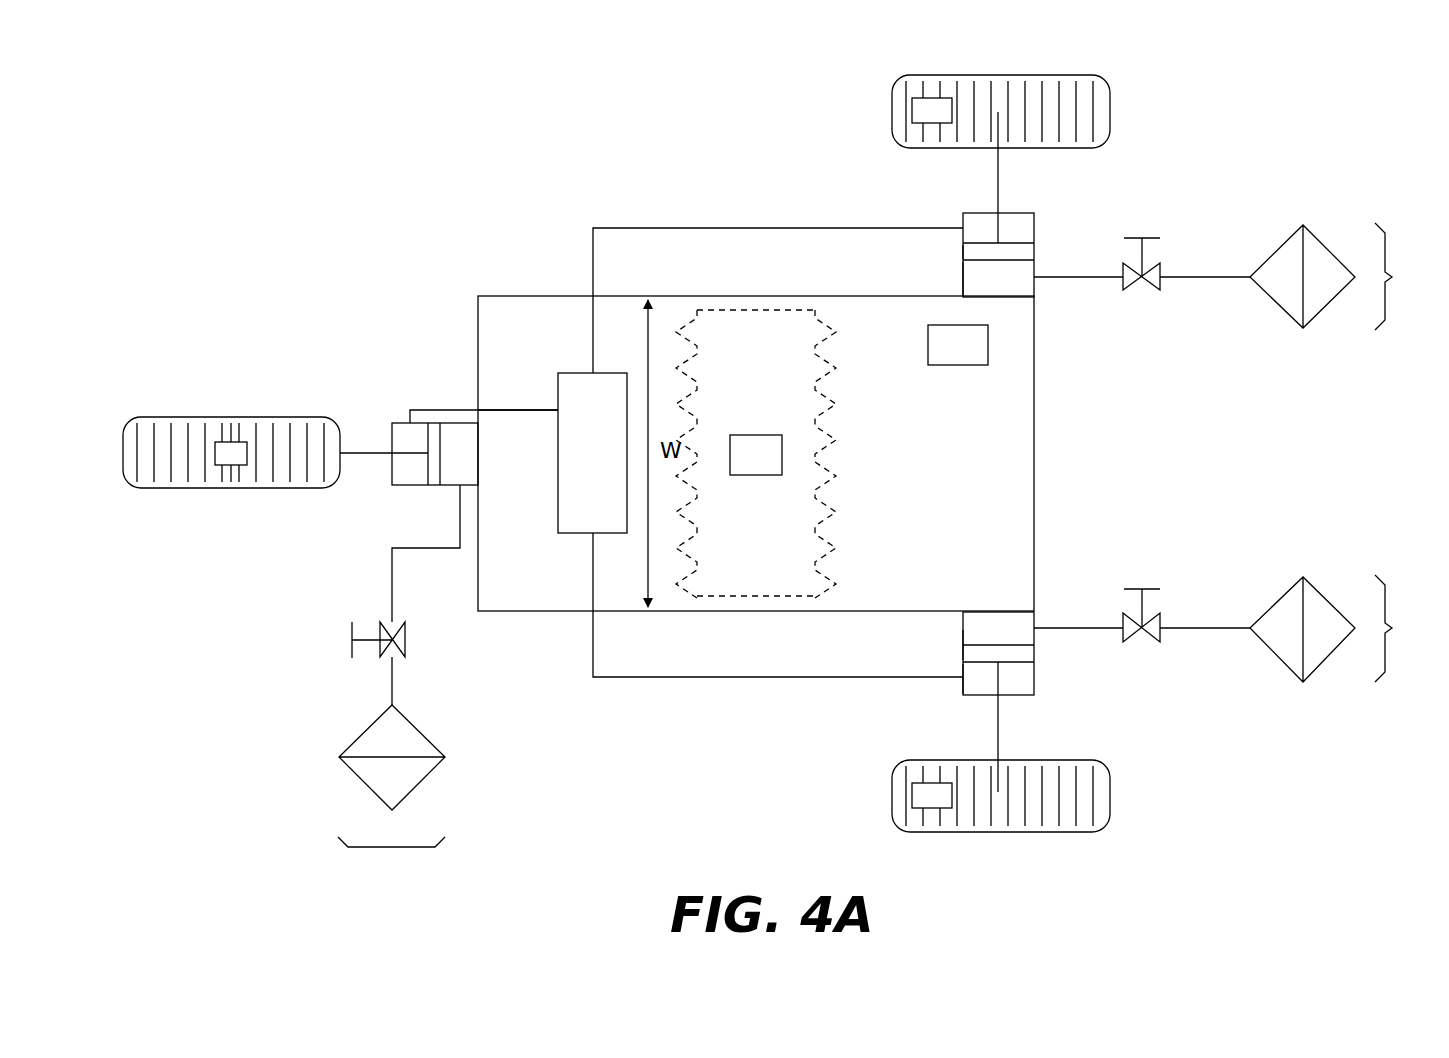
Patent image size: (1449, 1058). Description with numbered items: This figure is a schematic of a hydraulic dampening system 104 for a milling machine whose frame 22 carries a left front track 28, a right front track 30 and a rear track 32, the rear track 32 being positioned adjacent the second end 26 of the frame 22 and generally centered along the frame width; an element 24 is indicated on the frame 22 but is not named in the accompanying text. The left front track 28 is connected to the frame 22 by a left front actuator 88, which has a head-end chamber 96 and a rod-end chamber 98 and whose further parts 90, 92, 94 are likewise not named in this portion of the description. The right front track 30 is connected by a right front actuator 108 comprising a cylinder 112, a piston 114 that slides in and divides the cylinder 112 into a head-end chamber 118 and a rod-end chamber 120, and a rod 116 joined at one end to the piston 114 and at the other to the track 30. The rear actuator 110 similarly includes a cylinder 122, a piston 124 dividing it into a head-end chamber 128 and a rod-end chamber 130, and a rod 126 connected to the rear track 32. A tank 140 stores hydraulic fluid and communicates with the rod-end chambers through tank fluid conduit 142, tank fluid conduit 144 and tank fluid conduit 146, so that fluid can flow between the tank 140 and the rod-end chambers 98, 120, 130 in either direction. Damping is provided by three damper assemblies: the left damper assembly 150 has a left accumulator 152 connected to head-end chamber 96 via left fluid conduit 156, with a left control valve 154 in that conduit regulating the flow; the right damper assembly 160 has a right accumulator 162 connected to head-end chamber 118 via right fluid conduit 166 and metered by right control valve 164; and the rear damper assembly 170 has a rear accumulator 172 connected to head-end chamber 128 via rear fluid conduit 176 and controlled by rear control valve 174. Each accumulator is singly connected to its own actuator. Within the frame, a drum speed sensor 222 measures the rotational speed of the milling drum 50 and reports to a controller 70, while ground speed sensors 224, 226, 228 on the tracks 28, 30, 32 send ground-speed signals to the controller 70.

The hydraulic dampening system 104 is at (556, 88).
The frame 22 is at (1035, 468).
The vehicle 24 is at (1103, 445).
The second end 26 is at (452, 330).
The tank 140 is at (578, 465).
The tank fluid conduit 142 is at (746, 227).
The tank fluid conduit 144 is at (645, 680).
The tank fluid conduit 146 is at (510, 410).
The controller 70 is at (946, 357).
The drum speed sensor 222 is at (740, 468).
The milling drum 50 is at (770, 538).
The left front actuator 88 is at (1047, 216).
The first port 90 is at (963, 272).
The second port 92 is at (1035, 245).
The first axle 94 is at (998, 190).
The head-end chamber 96 is at (1005, 284).
The rod-end chamber 98 is at (1027, 222).
The left front track 28 is at (1100, 100).
The ground speed sensor 224 is at (932, 98).
The left damper assembly 150 is at (1392, 277).
The left accumulator 152 is at (1305, 228).
The left control valve 154 is at (1145, 240).
The left fluid conduit 156 is at (1195, 278).
The right front actuator 108 is at (1052, 608).
The cylinder 112 is at (963, 640).
The piston 114 is at (1020, 653).
The rod 116 is at (1000, 720).
The head-end chamber 118 is at (1005, 620).
The rod-end chamber 120 is at (973, 683).
The right front track 30 is at (1103, 790).
The ground speed sensor 226 is at (932, 808).
The right damper assembly 160 is at (1392, 628).
The right accumulator 162 is at (1305, 578).
The right control valve 164 is at (1145, 590).
The right fluid conduit 166 is at (1210, 629).
The rear actuator 110 is at (385, 492).
The cylinder 122 is at (405, 420).
The piston 124 is at (435, 482).
The rod 126 is at (360, 452).
The head-end chamber 128 is at (462, 432).
The rod-end chamber 130 is at (397, 465).
The rear track 32 is at (132, 462).
The ground speed sensor 228 is at (232, 440).
The rear damper assembly 170 is at (390, 850).
The rear accumulator 172 is at (427, 763).
The rear control valve 174 is at (352, 645).
The rear fluid conduit 176 is at (397, 688).